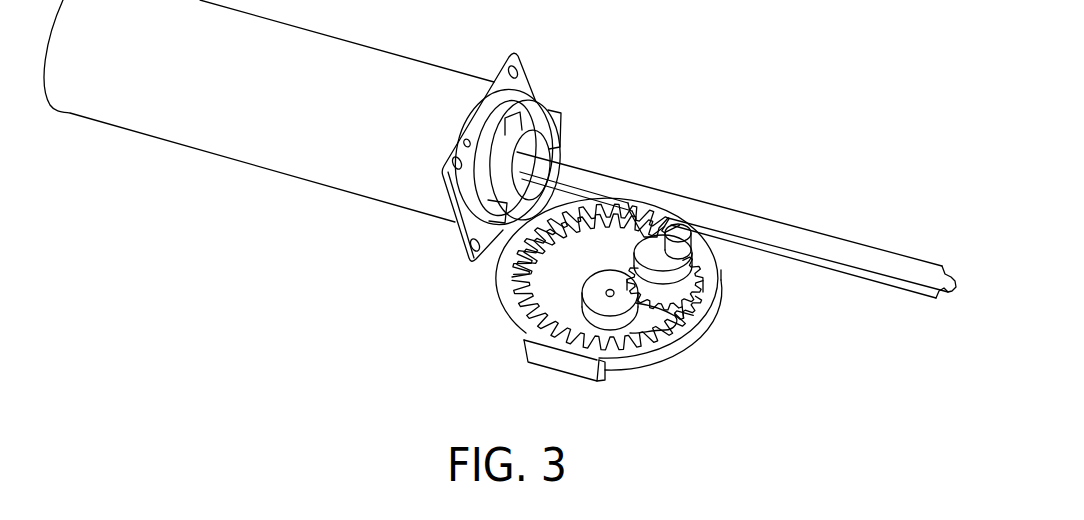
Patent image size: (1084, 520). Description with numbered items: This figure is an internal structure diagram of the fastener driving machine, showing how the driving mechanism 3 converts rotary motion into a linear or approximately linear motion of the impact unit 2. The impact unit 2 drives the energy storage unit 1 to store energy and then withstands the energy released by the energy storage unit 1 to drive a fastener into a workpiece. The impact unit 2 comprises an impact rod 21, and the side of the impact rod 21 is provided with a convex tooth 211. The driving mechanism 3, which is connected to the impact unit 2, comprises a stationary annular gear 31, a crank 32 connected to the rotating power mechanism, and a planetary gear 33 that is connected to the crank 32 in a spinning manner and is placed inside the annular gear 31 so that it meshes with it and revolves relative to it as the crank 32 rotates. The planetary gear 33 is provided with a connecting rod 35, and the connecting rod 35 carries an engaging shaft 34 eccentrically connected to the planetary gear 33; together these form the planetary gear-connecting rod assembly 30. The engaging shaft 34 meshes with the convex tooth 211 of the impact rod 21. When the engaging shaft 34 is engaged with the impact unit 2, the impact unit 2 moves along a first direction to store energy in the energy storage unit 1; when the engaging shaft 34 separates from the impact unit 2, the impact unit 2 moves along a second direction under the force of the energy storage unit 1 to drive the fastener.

The energy storage unit 1 is at (307, 182).
The impact unit 2 is at (611, 176).
The impact rod 21 is at (765, 226).
The convex tooth 211 is at (650, 224).
The driving mechanism 3 is at (565, 372).
The planetary gear-connecting rod assembly 30 is at (782, 282).
The stationary annular gear 31 is at (653, 355).
The crank 32 is at (614, 313).
The planetary gear 33 is at (688, 280).
The engaging shaft 34 is at (686, 232).
The connecting rod 35 is at (665, 258).